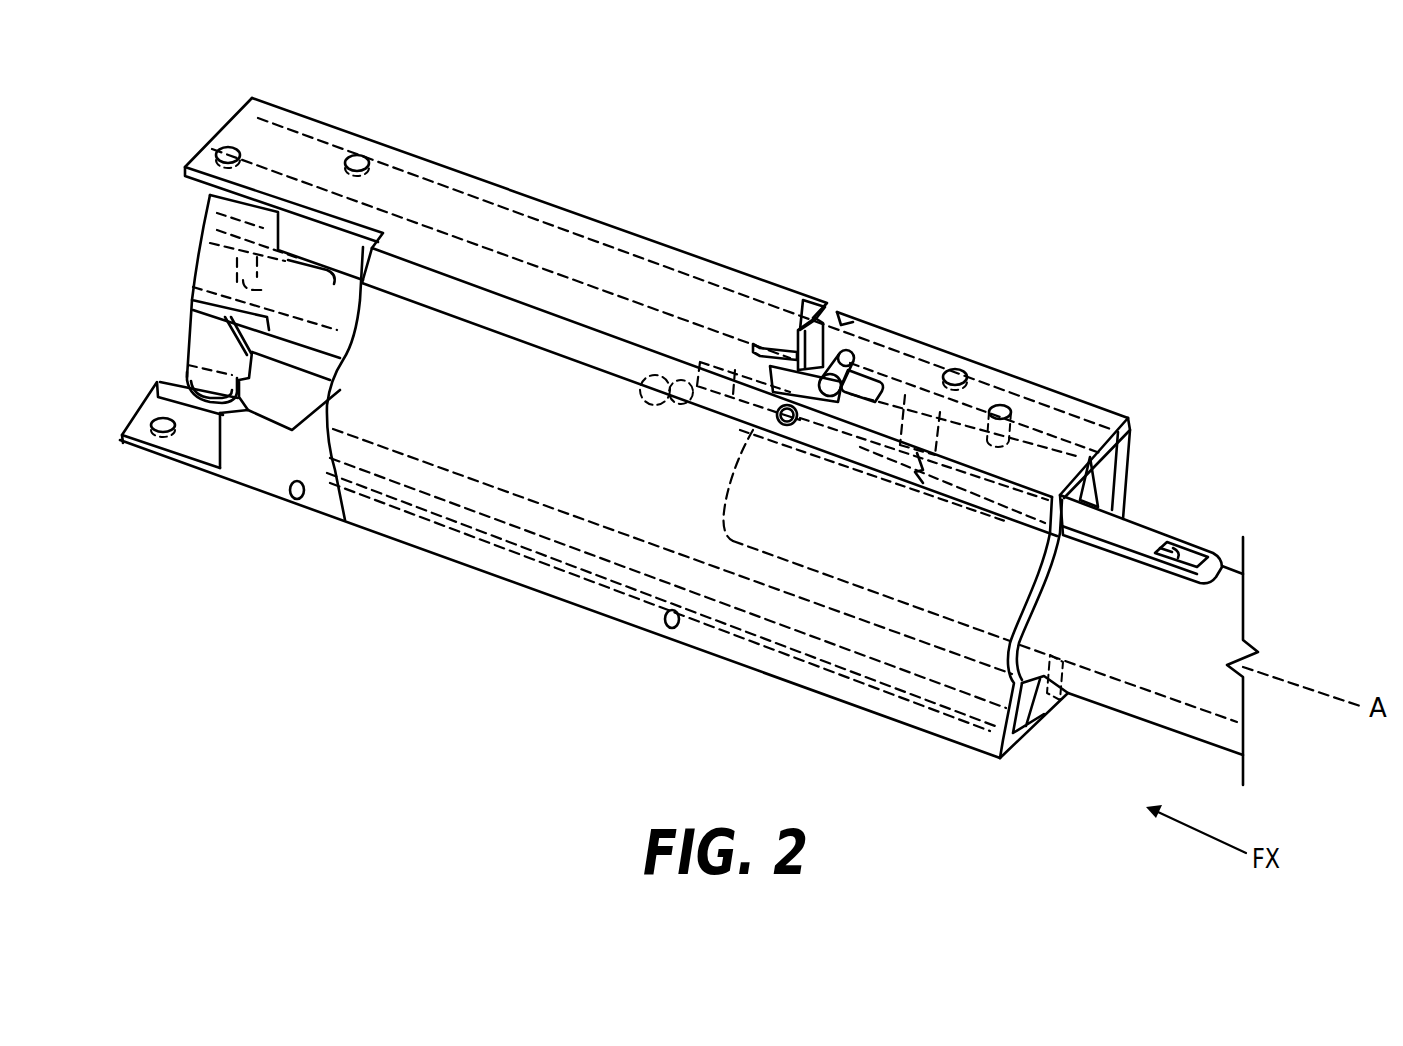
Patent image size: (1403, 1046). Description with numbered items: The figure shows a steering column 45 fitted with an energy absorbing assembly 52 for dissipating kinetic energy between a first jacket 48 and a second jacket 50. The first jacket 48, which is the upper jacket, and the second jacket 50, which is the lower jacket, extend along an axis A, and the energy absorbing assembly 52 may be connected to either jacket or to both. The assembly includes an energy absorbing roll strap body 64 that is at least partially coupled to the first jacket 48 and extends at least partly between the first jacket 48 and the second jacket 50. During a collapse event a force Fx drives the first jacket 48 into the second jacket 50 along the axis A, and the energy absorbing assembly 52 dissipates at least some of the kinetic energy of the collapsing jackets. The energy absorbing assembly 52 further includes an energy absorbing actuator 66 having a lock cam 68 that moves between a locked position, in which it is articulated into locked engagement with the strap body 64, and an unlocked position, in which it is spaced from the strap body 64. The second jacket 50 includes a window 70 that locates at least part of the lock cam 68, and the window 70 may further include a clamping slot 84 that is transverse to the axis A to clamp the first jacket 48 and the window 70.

The steering column 45 is at (1170, 265).
The first jacket 48 is at (1255, 608).
The second jacket 50 is at (362, 127).
The energy absorbing assembly 52 is at (967, 330).
The energy absorbing roll strap body 64 is at (1148, 522).
The energy absorbing actuator 66 is at (810, 283).
The lock cam 68 is at (797, 318).
The window 70 is at (890, 390).
The clamping slot 84 is at (815, 345).